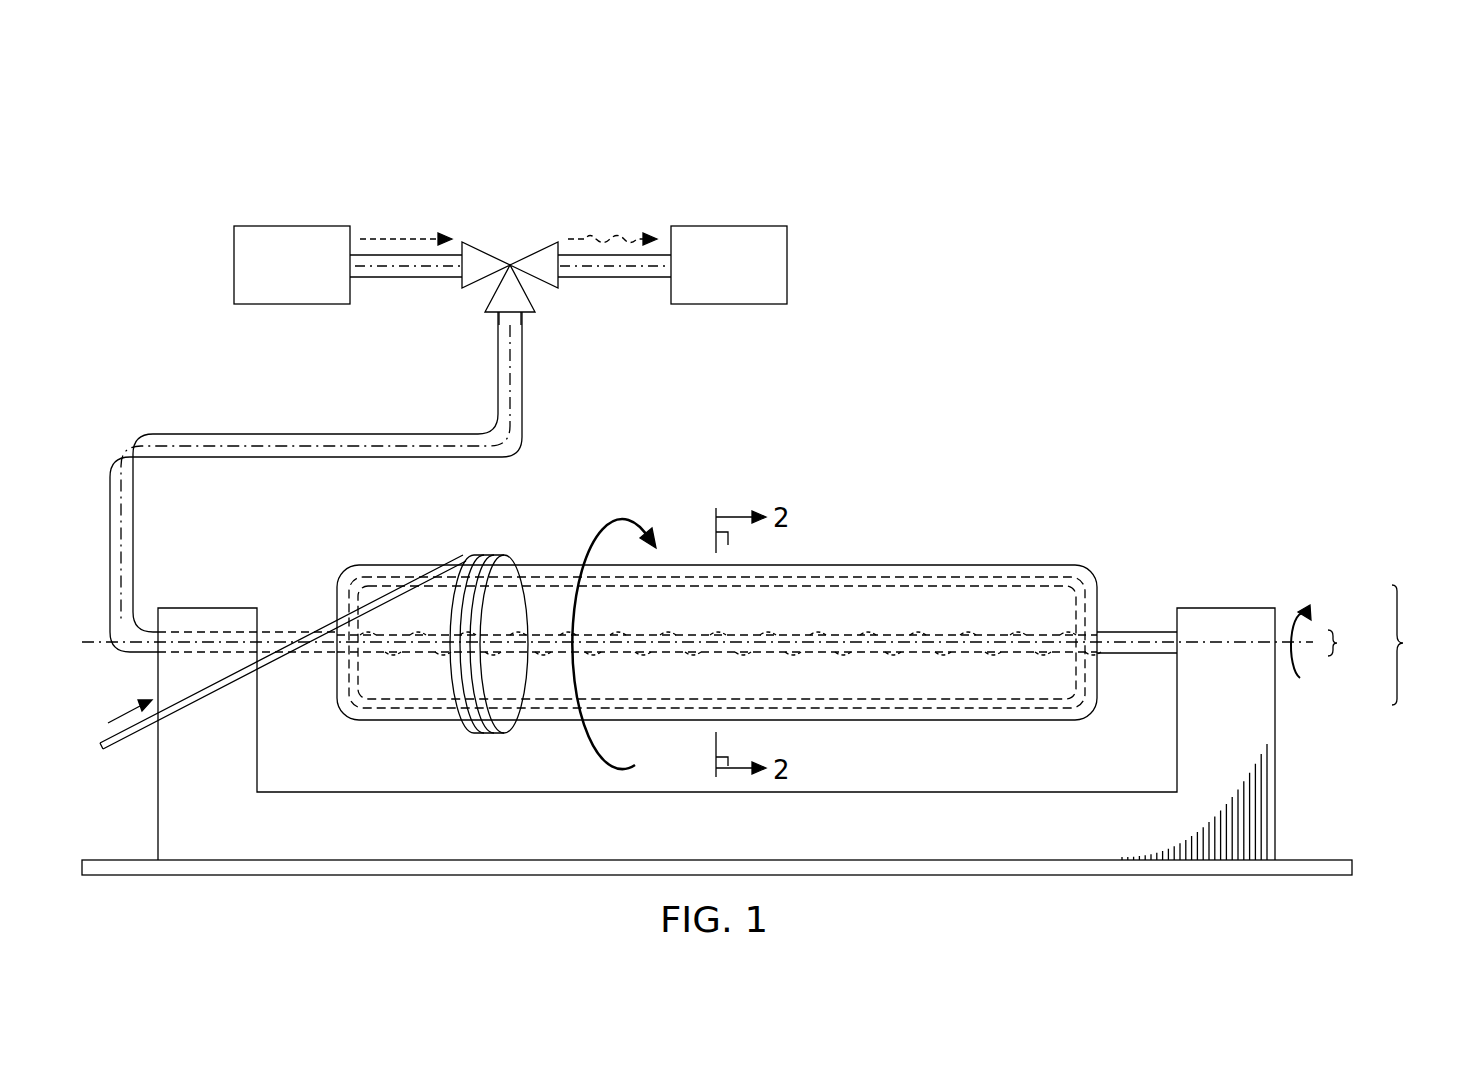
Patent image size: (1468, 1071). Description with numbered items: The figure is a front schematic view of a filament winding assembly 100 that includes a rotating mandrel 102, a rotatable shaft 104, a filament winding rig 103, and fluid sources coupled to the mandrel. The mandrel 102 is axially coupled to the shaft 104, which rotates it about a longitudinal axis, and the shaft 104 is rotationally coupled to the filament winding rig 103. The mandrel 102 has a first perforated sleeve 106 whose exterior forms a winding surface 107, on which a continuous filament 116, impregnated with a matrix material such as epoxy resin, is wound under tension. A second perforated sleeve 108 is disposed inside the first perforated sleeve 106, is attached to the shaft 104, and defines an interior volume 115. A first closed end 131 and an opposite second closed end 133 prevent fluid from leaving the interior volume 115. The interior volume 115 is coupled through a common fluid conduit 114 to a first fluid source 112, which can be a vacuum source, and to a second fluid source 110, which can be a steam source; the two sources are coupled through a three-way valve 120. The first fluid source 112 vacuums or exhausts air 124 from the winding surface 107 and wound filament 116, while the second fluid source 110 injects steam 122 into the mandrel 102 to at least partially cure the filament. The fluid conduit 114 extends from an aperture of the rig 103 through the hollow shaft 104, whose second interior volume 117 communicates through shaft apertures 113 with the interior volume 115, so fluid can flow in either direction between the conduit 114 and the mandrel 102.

The filament winding assembly 100 is at (446, 131).
The rotating mandrel 102 is at (824, 484).
The filament winding rig 103 is at (1268, 703).
The rotatable shaft 104 is at (288, 632).
The first perforated sleeve 106 is at (557, 566).
The winding surface 107 is at (965, 566).
The second perforated sleeve 108 is at (820, 582).
The second fluid source 110 is at (232, 262).
The fluid source 112 is at (788, 262).
The shaft apertures 113 is at (930, 634).
The fluid conduit 114 is at (315, 440).
The interior volume 115 is at (1421, 645).
The continuous filament 116 is at (495, 551).
The second interior volume 117 is at (1338, 641).
The three-way valve 120 is at (530, 247).
The steam 122 is at (388, 232).
The air 124 is at (597, 232).
The first closed end 131 is at (336, 672).
The second closed end 133 is at (1098, 670).